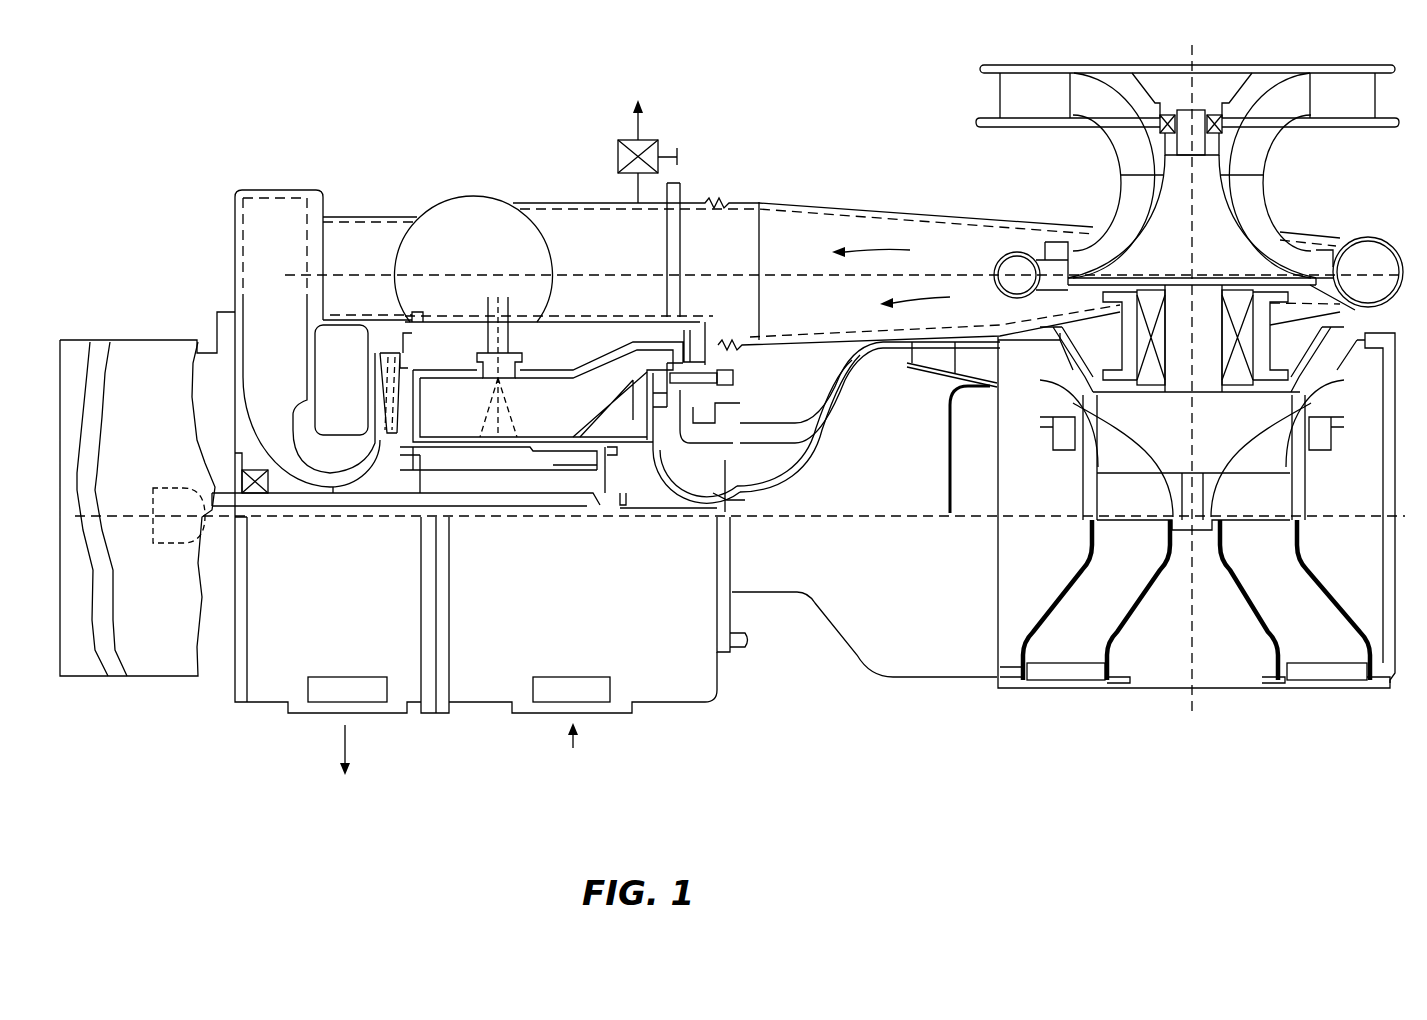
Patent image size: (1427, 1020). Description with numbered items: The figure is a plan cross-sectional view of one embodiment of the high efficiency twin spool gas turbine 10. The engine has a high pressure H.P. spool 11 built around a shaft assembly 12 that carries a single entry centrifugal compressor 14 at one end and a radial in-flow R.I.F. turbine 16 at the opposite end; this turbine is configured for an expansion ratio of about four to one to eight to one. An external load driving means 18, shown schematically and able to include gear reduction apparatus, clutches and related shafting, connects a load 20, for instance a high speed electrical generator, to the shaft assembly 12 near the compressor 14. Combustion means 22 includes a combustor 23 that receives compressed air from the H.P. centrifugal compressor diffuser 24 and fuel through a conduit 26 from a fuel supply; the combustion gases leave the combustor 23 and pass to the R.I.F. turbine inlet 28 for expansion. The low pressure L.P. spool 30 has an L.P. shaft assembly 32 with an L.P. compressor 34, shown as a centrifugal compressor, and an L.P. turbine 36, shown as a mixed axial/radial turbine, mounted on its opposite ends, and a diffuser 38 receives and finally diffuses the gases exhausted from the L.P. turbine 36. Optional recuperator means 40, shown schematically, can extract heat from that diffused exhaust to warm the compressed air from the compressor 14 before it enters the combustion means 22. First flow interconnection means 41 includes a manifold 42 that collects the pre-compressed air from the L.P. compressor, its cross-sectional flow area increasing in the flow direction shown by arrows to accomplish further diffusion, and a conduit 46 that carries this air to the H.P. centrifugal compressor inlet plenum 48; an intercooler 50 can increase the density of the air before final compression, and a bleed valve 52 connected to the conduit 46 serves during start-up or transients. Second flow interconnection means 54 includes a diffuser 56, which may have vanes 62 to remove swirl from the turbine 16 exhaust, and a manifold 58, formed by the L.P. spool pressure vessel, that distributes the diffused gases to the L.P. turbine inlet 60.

The gas turbine 10 is at (482, 65).
The H.P. spool 11 is at (468, 170).
The shaft assembly 12 is at (533, 497).
The single entry centrifugal compressor 14 is at (343, 477).
The R.I.F. turbine 16 is at (687, 482).
The external load driving means 18 is at (178, 545).
The load 20 is at (137, 340).
The combustion means 22 is at (570, 362).
The combustor 23 is at (573, 357).
The H.P. centrifugal compressor diffuser 24 is at (390, 363).
The conduit 26 is at (482, 310).
The R.I.F. turbine inlet 28 is at (740, 367).
The L.P. spool 30 is at (955, 708).
The L.P. shaft assembly 32 is at (1217, 355).
The L.P. compressor 34 is at (1270, 197).
The L.P. turbine 36 is at (1308, 473).
The diffuser 38 is at (1317, 578).
The recuperator means 40 is at (727, 700).
The first flow interconnection means 41 is at (938, 193).
The manifold 42 is at (1035, 218).
The conduit 46 is at (398, 216).
The H.P. centrifugal compressor inlet plenum 48 is at (1370, 238).
The intercooler 50 is at (497, 195).
The bleed valve 52 is at (656, 140).
The second flow interconnection means 54 is at (855, 660).
The diffuser 56 is at (820, 448).
The manifold 58 is at (1398, 655).
The L.P. turbine inlet 60 is at (1037, 417).
The vanes 62 is at (907, 362).